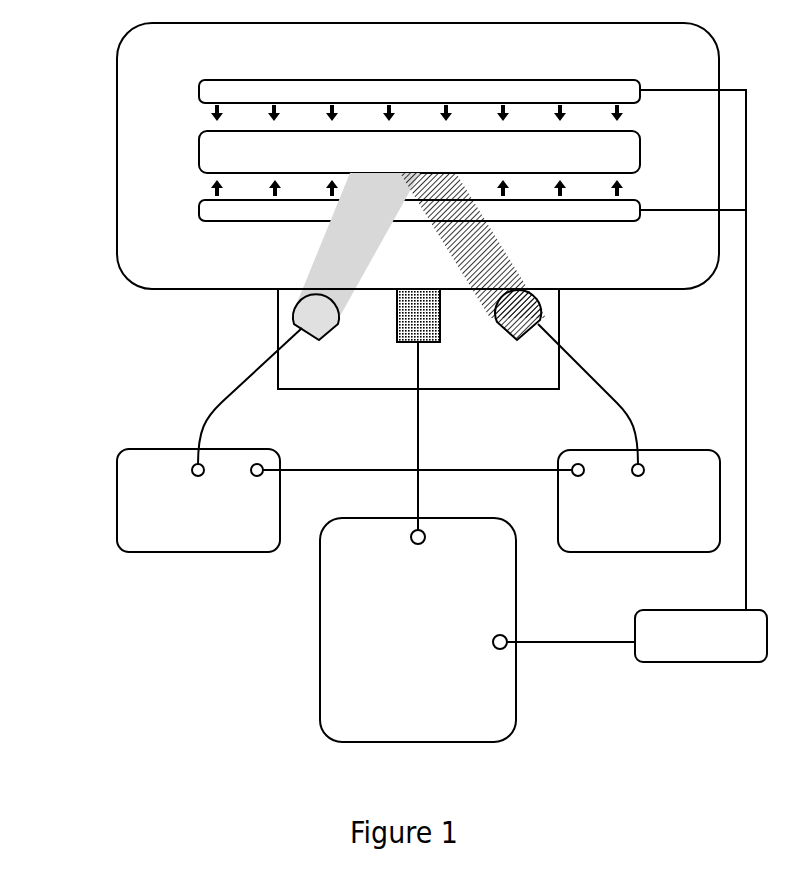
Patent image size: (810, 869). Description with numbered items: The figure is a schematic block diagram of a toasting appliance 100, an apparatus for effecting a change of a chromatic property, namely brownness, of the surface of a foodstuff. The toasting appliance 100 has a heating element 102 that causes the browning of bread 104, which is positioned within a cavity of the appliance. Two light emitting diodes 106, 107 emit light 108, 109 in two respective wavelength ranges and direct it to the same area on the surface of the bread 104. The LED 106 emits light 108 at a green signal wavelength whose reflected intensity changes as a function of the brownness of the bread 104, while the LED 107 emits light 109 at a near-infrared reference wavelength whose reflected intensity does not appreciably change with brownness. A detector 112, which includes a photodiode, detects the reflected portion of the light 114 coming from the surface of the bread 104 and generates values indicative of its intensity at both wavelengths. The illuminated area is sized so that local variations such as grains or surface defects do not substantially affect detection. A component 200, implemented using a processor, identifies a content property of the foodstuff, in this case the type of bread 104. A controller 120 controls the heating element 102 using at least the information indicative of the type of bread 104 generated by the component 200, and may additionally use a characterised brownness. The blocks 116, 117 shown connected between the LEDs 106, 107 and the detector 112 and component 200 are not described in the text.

The toasting appliance 100 is at (120, 389).
The heating element 102 is at (643, 105).
The bread 104 is at (197, 141).
The light emitting diode 106 is at (293, 310).
The light emitting diode 107 is at (546, 310).
The light 108 is at (352, 260).
The light 109 is at (487, 260).
The detector 112 is at (438, 338).
The reflected portion of the light 114 is at (420, 276).
The light source controller 116 is at (344, 500).
The detector controller 117 is at (639, 501).
The controller 120 is at (637, 636).
The component 200 is at (519, 722).